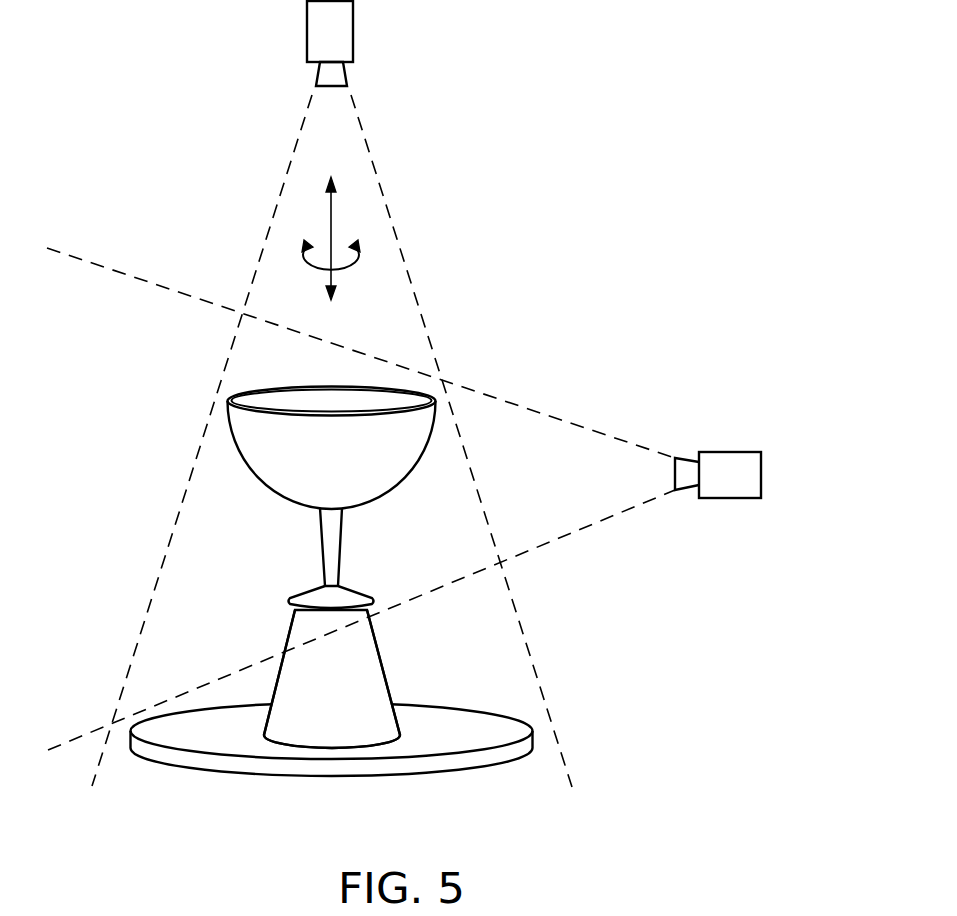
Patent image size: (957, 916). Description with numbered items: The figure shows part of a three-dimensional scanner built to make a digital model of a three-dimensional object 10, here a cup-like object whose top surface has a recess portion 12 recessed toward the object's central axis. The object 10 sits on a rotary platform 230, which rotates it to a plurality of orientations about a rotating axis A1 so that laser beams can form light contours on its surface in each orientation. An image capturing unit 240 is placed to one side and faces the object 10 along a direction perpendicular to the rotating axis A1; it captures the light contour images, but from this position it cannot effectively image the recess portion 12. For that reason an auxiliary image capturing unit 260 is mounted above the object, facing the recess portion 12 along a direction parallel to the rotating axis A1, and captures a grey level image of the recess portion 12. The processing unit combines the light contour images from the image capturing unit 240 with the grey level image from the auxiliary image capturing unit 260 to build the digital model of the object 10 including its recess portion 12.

The 3D object 10 is at (338, 480).
The recess portion 12 is at (323, 393).
The rotary platform 230 is at (445, 722).
The image capturing unit 240 is at (763, 473).
The auxiliary image capturing unit 260 is at (355, 31).
The rotating axis A1 is at (333, 213).